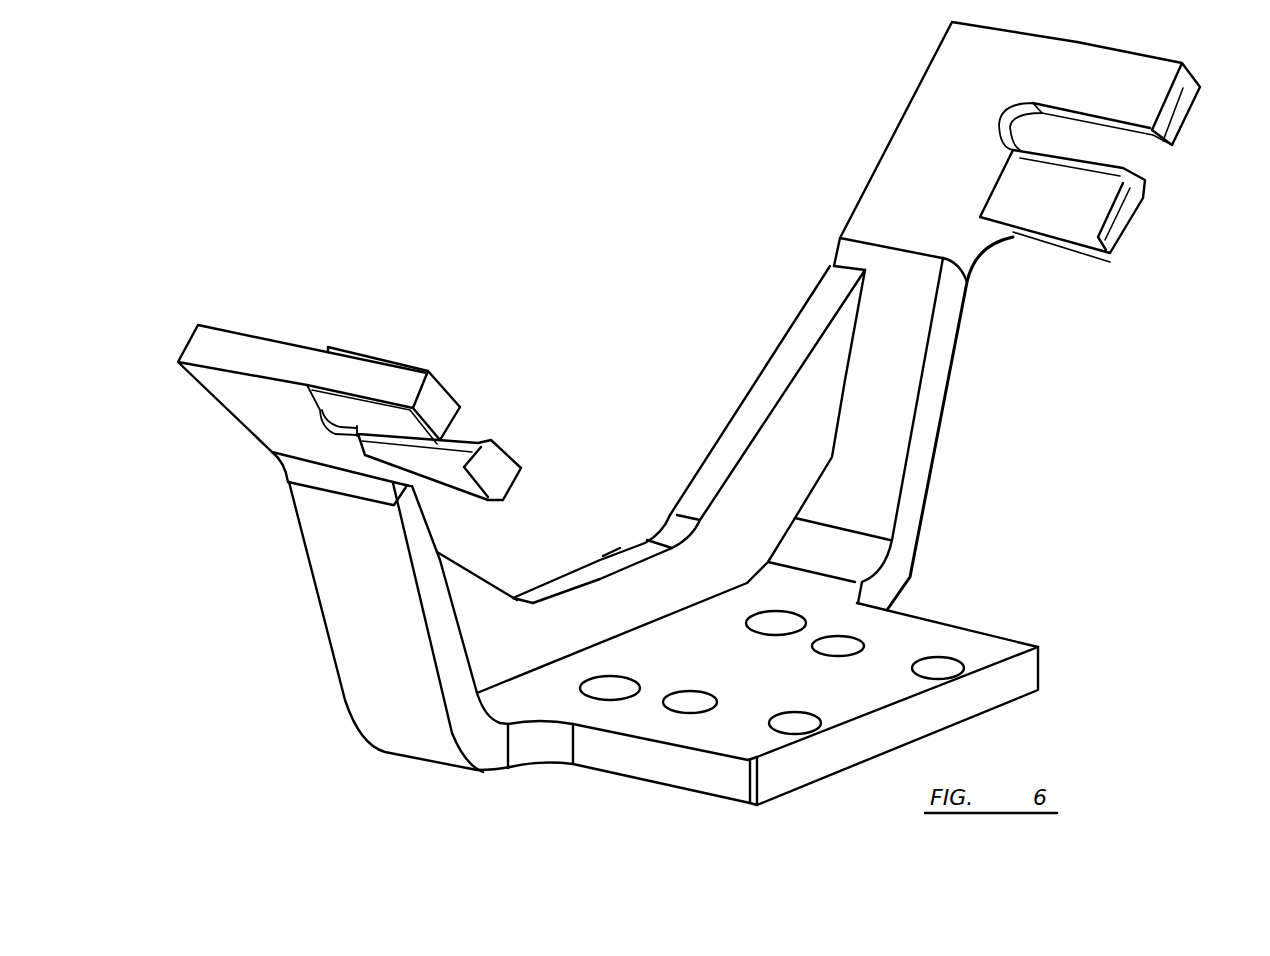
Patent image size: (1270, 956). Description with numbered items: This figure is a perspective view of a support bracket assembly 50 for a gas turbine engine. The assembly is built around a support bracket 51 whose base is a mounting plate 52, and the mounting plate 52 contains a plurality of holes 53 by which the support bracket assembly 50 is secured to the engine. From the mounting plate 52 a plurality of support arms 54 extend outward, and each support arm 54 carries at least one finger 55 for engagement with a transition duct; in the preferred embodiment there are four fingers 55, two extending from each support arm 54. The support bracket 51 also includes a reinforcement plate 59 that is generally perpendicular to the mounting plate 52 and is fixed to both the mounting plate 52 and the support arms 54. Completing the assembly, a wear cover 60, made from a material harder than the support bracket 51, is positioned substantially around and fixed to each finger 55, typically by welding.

The support bracket assembly 50 is at (506, 149).
The support bracket 51 is at (594, 549).
The mounting plate 52 is at (762, 688).
The holes 53 is at (945, 668).
The support arms 54 is at (387, 665).
The finger 55 is at (292, 432).
The reinforcement plate 59 is at (632, 615).
The wear cover 60 is at (462, 440).